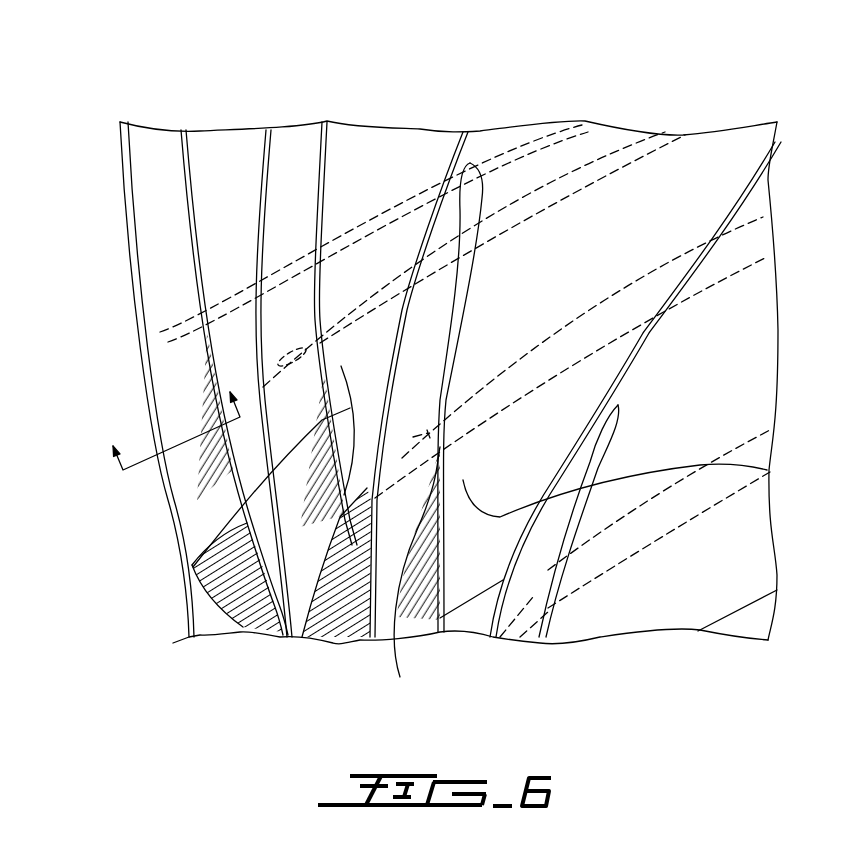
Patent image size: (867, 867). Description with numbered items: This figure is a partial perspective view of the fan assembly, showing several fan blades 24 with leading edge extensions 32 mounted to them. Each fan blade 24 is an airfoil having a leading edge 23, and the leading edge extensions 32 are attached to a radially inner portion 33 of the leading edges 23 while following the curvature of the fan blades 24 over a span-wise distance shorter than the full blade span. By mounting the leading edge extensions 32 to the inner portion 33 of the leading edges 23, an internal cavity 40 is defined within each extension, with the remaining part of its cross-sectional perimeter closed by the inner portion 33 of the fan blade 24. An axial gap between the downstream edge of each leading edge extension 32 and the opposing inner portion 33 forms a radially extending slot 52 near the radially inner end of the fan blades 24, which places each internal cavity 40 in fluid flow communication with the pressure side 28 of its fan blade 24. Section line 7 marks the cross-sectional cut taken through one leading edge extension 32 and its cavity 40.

The fan blades 24 is at (200, 140).
The leading edge extensions 32 is at (277, 178).
The leading edge 23 is at (462, 138).
The pressure side 28 is at (631, 247).
The internal cavity 40 is at (292, 345).
The radially extending slot 52 is at (205, 353).
The section line 7- 7 is at (172, 413).
The radially inner portion 33 is at (767, 470).